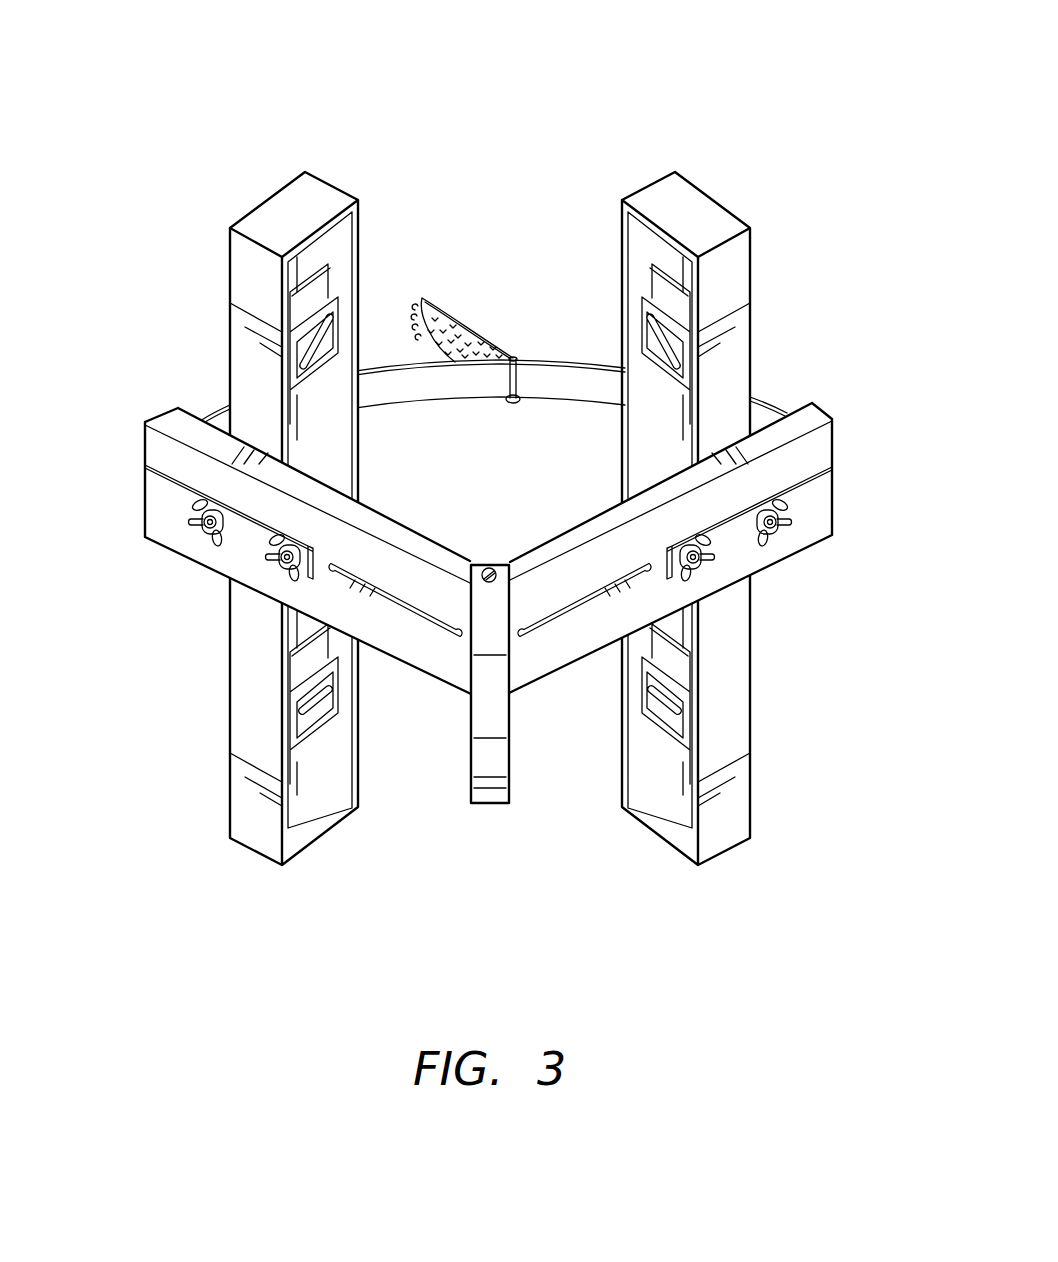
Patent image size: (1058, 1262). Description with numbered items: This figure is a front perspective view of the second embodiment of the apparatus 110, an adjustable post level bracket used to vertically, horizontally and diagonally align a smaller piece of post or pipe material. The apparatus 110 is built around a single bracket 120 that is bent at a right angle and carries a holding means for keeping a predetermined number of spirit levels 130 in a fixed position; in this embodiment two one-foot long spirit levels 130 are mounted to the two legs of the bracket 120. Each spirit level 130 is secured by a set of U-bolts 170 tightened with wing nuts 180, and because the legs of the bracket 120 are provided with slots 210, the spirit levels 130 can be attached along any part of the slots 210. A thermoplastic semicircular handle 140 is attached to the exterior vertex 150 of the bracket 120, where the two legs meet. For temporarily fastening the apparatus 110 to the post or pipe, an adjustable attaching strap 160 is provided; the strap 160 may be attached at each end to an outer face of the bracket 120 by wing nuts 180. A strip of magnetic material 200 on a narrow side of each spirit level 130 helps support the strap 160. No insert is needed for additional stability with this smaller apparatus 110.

The apparatus 110 is at (781, 151).
The bracket 120 is at (420, 645).
The spirit level 130 is at (240, 258).
The handle 140 is at (492, 806).
The exterior vertex 150 is at (492, 568).
The attaching strap 160 is at (563, 376).
The U-bolt 170 is at (272, 560).
The wing nut 180 is at (275, 545).
The strip of magnetic material 200 is at (360, 232).
The slot 210 is at (342, 572).